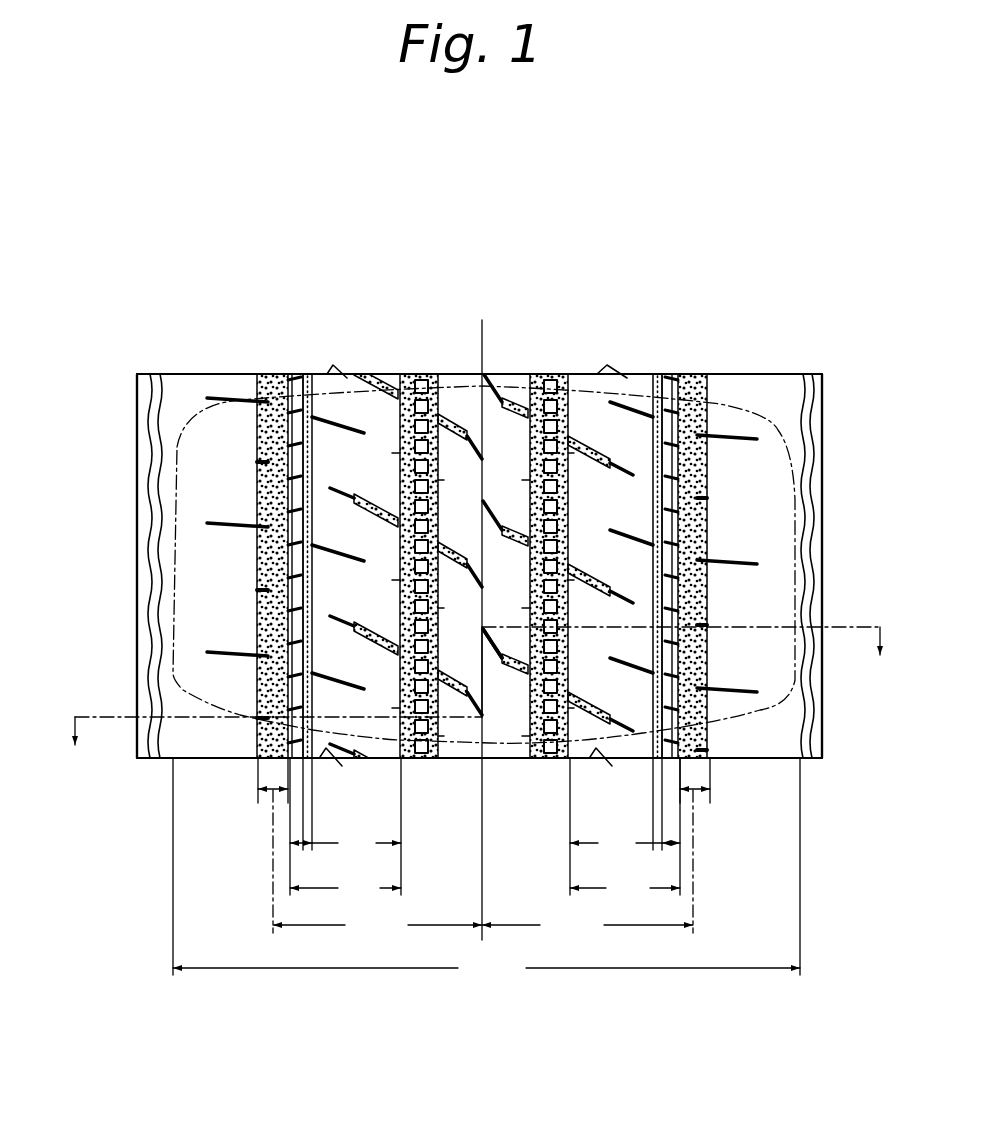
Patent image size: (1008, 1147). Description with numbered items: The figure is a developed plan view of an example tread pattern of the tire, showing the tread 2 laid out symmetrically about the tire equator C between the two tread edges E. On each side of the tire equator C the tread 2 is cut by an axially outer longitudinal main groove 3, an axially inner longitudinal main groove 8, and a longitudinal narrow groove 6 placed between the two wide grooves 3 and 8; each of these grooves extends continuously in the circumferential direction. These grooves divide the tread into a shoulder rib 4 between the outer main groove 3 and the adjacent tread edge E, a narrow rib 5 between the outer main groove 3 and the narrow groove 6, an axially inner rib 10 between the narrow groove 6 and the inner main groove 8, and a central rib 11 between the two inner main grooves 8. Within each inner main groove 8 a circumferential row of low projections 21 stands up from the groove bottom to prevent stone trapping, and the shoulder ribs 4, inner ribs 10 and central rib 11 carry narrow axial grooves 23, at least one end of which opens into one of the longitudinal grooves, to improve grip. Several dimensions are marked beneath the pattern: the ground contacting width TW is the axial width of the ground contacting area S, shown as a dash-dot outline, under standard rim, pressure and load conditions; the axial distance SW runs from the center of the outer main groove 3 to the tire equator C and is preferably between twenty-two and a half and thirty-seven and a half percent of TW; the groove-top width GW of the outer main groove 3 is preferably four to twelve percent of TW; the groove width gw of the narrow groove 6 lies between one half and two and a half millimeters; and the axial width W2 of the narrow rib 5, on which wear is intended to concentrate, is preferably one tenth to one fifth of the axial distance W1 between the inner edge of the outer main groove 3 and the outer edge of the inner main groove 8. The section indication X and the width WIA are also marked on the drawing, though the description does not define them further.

The tread 2 is at (785, 408).
The axially outer longitudinal main groove 3 is at (270, 382).
The shoulder rib 4 is at (190, 392).
The narrow rib 5 is at (292, 390).
The longitudinal narrow groove 6 is at (313, 380).
The axially inner longitudinal main groove 8 is at (408, 377).
The axially inner rib 10 is at (352, 403).
The central rib 11 is at (462, 400).
The projections 21 is at (535, 757).
The narrow axial grooves 23 is at (632, 733).
The tire equator C is at (480, 318).
The ground contacting area S is at (177, 447).
The tread edge E is at (142, 652).
The section line X- X is at (476, 693).
The groove-top width GW is at (268, 795).
The groove width gw is at (312, 843).
The axial width of the narrow rib W2 is at (290, 843).
The intermediate land width WIA is at (487, 844).
The axial distance W1 is at (485, 829).
The axial distance SW is at (483, 865).
The ground contacting width TW is at (486, 870).